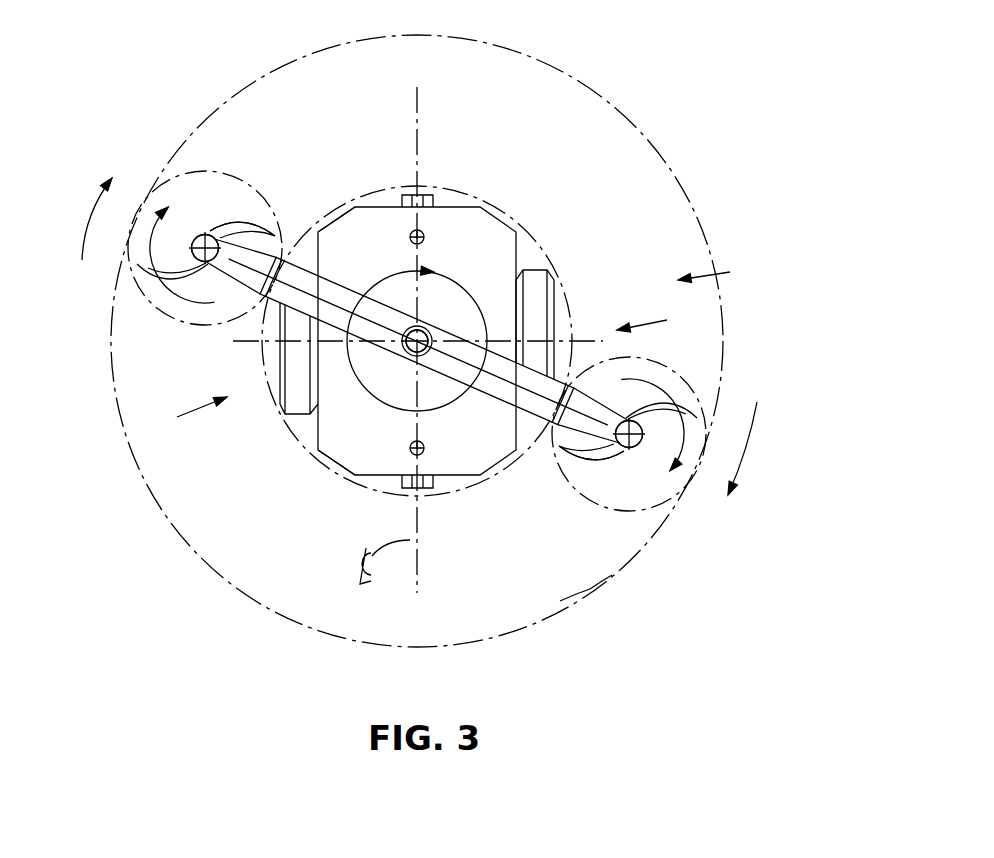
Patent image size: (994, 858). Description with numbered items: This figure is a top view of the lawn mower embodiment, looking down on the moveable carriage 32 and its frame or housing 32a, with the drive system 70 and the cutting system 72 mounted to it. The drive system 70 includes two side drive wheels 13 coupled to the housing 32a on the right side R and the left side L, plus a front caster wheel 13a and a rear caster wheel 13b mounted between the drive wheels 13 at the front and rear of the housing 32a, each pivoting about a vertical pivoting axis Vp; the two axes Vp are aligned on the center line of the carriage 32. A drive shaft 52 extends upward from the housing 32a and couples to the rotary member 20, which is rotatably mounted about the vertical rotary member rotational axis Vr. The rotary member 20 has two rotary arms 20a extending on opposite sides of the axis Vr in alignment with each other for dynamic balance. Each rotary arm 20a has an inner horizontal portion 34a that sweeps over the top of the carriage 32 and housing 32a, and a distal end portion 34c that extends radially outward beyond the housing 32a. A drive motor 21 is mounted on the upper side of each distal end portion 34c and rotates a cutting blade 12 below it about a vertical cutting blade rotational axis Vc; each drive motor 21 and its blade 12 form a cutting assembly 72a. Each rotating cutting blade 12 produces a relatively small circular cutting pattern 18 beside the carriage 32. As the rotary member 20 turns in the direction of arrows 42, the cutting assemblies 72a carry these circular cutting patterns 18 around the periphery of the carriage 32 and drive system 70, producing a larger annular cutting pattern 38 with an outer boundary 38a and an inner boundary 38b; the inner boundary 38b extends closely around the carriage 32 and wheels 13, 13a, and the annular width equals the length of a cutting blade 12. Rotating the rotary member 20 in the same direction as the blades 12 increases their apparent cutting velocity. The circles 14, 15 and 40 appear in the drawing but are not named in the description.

The cutting blade 12 is at (193, 262).
The drive wheel 13 is at (297, 413).
The front caster wheel 13a is at (428, 490).
The rear caster wheel 13b is at (428, 194).
The cutting path circle 14 is at (667, 167).
The inner circle 15 is at (527, 235).
The circular cutting pattern 18 is at (213, 173).
The rotary member 20 is at (458, 377).
The rotary arm 20a is at (333, 318).
The drive motor 21 is at (198, 270).
The carriage 32 is at (332, 237).
The housing 32a is at (345, 218).
The inner horizontal portion 34a is at (298, 265).
The distal end portion 34c is at (206, 298).
The annular cutting pattern 38 is at (565, 610).
The outer boundary 38a is at (594, 592).
The inner boundary 38b is at (313, 463).
The rotor circle 40 is at (383, 277).
The rotation arrow 42 is at (95, 212).
The drive shaft 52 is at (421, 334).
The drive system 70 is at (656, 322).
The cutting system 72 is at (693, 512).
The cutting assembly 72a is at (193, 153).
The cutting blade rotational axis Vc is at (678, 355).
The pivoting axis Vp is at (426, 236).
The rotary member rotational axis Vr is at (431, 341).
The left side L is at (712, 272).
The right side R is at (193, 413).